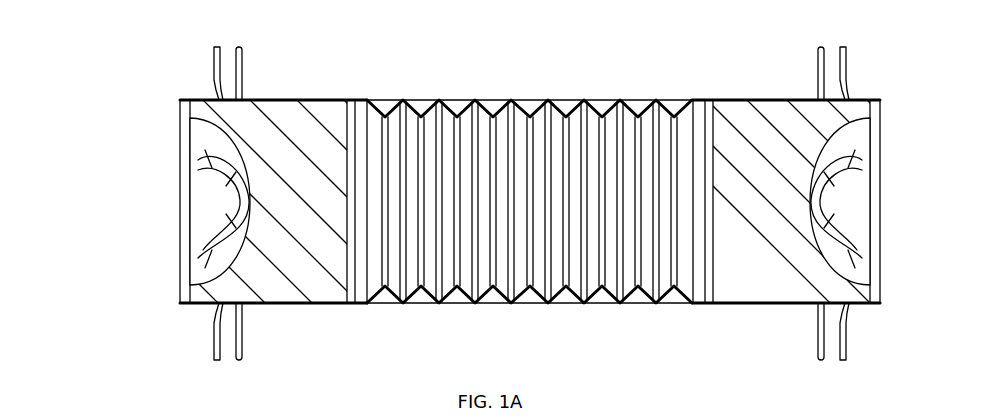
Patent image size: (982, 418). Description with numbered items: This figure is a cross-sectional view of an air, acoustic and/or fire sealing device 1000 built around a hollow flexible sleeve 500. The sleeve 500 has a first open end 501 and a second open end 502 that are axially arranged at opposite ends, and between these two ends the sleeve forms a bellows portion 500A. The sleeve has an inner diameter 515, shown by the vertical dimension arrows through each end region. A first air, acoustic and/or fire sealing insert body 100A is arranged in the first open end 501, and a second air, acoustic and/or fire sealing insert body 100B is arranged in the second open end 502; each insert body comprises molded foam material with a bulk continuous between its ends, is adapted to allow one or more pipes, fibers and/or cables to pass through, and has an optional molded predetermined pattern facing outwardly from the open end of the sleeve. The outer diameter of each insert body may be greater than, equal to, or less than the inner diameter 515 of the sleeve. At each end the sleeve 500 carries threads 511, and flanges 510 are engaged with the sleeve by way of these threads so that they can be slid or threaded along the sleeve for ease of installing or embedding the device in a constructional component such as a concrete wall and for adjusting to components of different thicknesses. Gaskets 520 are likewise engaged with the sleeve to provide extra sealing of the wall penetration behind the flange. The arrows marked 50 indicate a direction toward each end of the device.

The air, acoustic and/or fire sealing device 1000 is at (162, 82).
The hollow flexible sleeve 500 is at (490, 82).
The bellows portion 500A is at (692, 303).
The threads 511 is at (313, 100).
The inner diameter 515 is at (298, 300).
The first air, acoustic and/or fire sealing insert body 100A is at (857, 112).
The second air, acoustic and/or fire sealing insert body 100B is at (282, 287).
The first open end 501 is at (880, 268).
The second open end 502 is at (180, 263).
The flanges 510 is at (213, 352).
The gaskets 520 is at (244, 355).
The insertion direction 50 is at (168, 192).